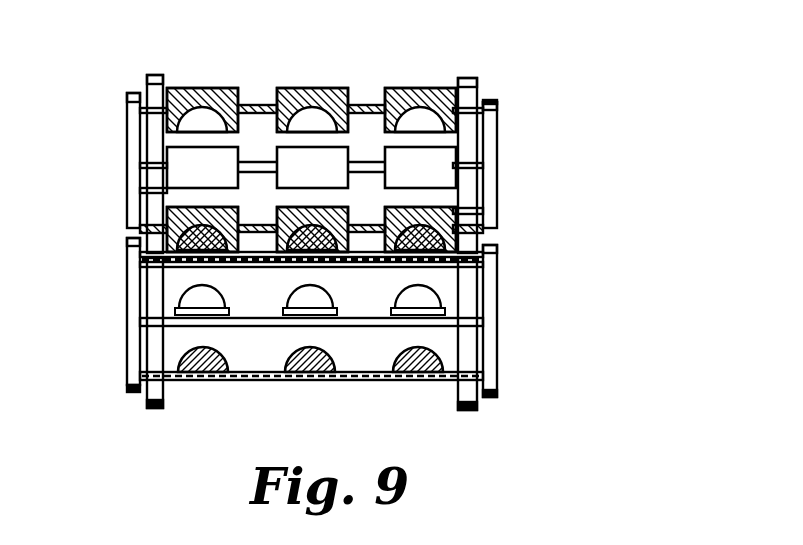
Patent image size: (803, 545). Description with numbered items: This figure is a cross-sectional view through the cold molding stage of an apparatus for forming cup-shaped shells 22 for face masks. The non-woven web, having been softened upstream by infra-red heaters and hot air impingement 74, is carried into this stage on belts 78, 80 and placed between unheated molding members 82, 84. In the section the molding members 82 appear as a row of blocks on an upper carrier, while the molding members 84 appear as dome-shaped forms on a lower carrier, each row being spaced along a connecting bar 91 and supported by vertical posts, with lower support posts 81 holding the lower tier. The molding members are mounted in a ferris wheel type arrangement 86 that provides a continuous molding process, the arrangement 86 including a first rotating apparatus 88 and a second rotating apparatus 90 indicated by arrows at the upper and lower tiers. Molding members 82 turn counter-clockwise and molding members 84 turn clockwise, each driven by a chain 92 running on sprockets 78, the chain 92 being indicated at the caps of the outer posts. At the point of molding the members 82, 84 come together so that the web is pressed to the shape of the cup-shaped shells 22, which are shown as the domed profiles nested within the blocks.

The shell 22 is at (482, 212).
The hot air impingement 74 is at (130, 224).
The belt 78 is at (127, 152).
The belt 80 is at (480, 88).
The lower support post 81 is at (468, 288).
The molding member 82 is at (328, 92).
The molding member 84 is at (165, 293).
The ferris wheel type arrangement 86 is at (447, 51).
The first rotating apparatus 88 is at (550, 302).
The second rotating apparatus 90 is at (540, 168).
The connecting bar 91 is at (253, 106).
The chain 92 is at (497, 102).